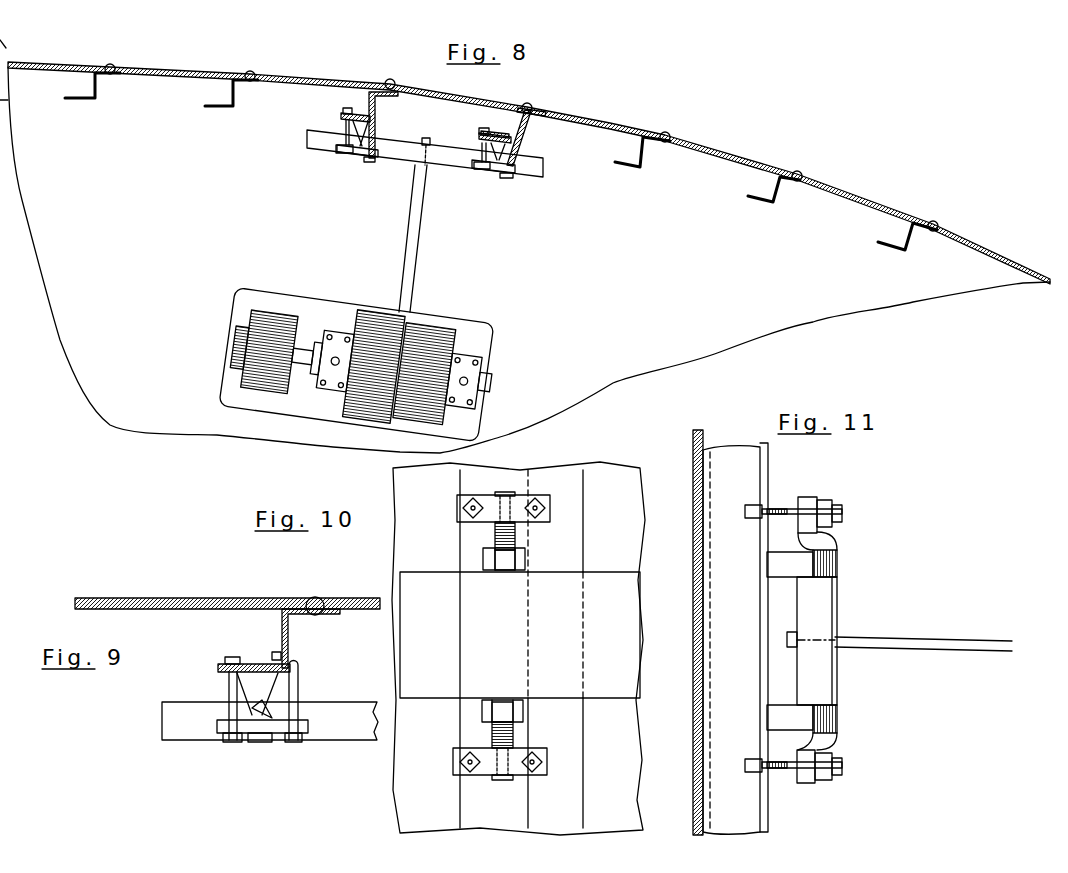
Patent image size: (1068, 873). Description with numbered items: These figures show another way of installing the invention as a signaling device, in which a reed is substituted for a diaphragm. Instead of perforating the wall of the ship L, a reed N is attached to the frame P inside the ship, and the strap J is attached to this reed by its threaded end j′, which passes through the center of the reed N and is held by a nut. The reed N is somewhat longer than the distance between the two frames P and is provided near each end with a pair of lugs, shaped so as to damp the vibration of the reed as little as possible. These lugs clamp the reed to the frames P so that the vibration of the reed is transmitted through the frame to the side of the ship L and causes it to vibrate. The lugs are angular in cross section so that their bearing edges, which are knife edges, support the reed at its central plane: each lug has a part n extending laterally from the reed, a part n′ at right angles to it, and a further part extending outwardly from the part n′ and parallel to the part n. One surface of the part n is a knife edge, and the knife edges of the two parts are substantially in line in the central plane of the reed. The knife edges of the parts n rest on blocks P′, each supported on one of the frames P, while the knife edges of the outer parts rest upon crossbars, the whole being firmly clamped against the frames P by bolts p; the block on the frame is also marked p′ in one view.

In FIG. 8, the wall of the ship L is at (529, 173).
In FIG. 9, the wall of the ship L is at (227, 592).
In FIG. 10, the wall of the ship L is at (518, 648).
In FIG. 11, the wall of the ship L is at (690, 721).
In FIG. 8, the frame P is at (784, 201).
In FIG. 9, the frame P is at (280, 632).
In FIG. 10, the frame P is at (521, 649).
In FIG. 11, the frame P is at (735, 638).
In FIG. 8, the block P′ is at (352, 120).
In FIG. 9, the block P′ is at (254, 675).
In FIG. 10, the block P′ is at (527, 562).
In FIG. 11, the block P′ is at (768, 728).
In FIG. 8, the bolt p is at (347, 127).
In FIG. 9, the bolt p is at (293, 670).
In FIG. 11, the bolt p is at (780, 508).
In FIG. 8, the block p′ is at (513, 140).
In FIG. 8, the reed N is at (462, 163).
In FIG. 9, the reed N is at (338, 736).
In FIG. 10, the reed N is at (520, 635).
In FIG. 11, the reed N is at (840, 601).
In FIG. 8, the lug part extending laterally from the reed n is at (493, 178).
In FIG. 9, the lug part extending laterally from the reed n is at (257, 742).
In FIG. 10, the lug part extending laterally from the reed n is at (503, 553).
In FIG. 11, the lug part extending laterally from the reed n is at (836, 565).
In FIG. 11, the lug part at right angles n′ is at (822, 540).
In FIG. 8, the strap J is at (418, 265).
In FIG. 11, the strap J is at (940, 642).
In FIG. 8, the threaded end of the strap j′ is at (429, 142).
In FIG. 11, the threaded end of the strap j′ is at (788, 641).